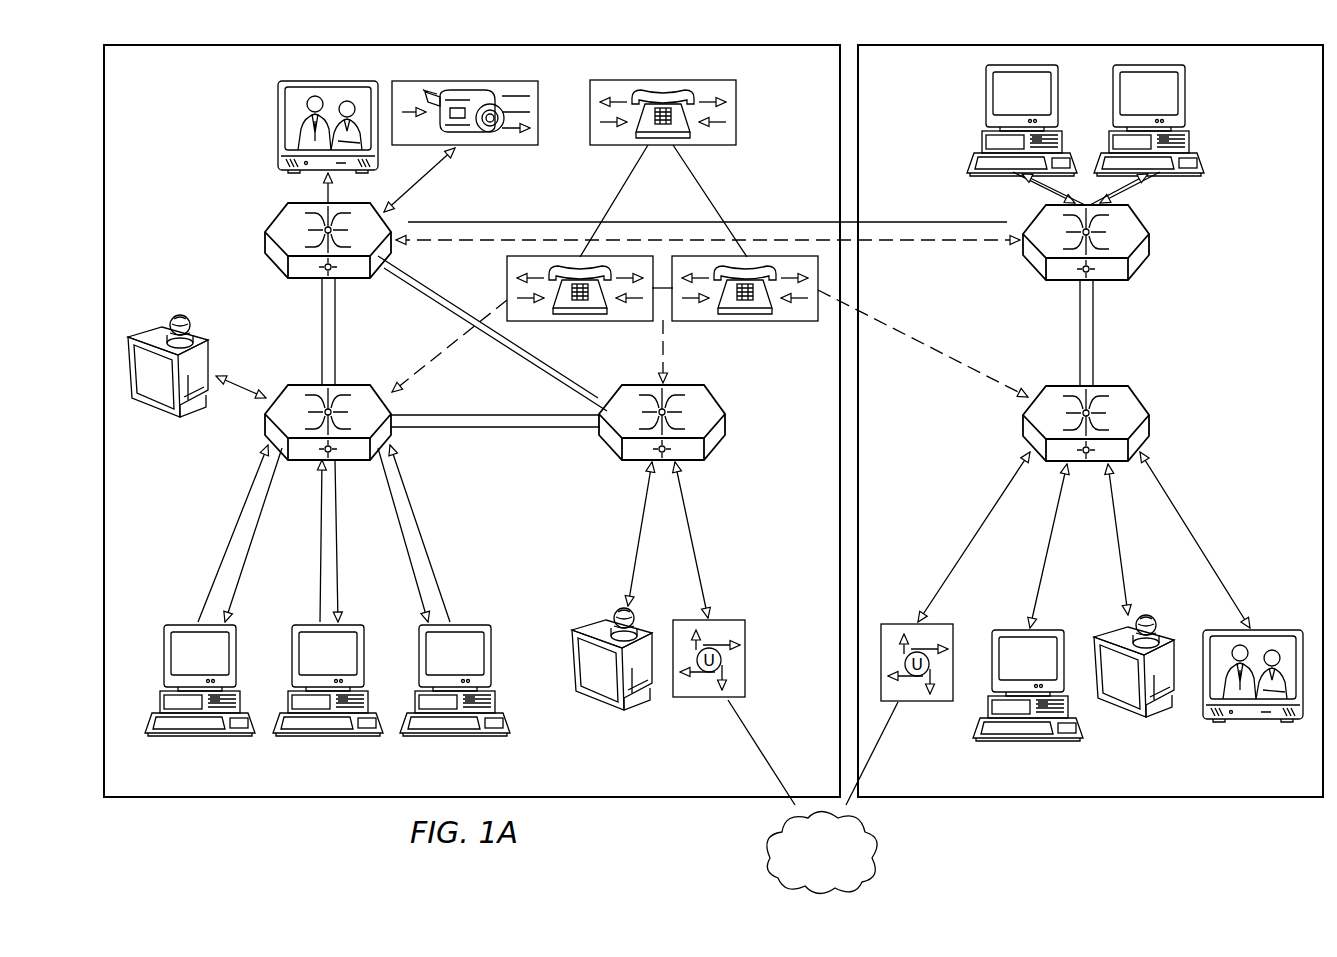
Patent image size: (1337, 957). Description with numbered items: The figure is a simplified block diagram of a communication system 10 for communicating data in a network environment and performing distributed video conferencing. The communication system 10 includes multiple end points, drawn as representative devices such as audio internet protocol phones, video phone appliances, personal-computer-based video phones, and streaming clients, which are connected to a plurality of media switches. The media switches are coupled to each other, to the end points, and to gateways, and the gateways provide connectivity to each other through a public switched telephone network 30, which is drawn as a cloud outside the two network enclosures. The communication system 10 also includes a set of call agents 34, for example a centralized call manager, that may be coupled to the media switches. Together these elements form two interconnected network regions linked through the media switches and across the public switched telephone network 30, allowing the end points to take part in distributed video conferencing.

The communication system 10 is at (640, 850).
The public switched telephone network (PSTN) 30 is at (768, 852).
The call agents 34 is at (778, 118).